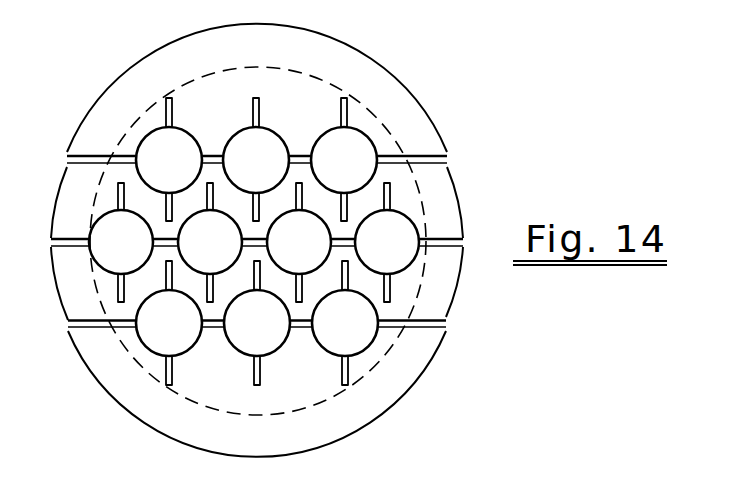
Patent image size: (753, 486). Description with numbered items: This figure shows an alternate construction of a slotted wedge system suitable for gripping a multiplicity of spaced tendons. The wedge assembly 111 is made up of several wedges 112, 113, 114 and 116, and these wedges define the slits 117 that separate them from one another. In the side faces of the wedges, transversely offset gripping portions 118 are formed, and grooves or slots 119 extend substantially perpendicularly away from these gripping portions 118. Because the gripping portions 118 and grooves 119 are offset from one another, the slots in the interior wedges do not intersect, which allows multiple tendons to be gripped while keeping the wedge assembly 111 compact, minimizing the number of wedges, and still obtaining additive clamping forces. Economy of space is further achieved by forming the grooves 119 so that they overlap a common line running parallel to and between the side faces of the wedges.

The wedge assembly 111 is at (476, 252).
The wedge 112 is at (387, 397).
The wedge 113 is at (446, 290).
The wedge 114 is at (446, 205).
The wedge 116 is at (308, 112).
The slit 117 is at (82, 166).
The gripping portion 118 is at (197, 222).
The groove or slot 119 is at (297, 200).